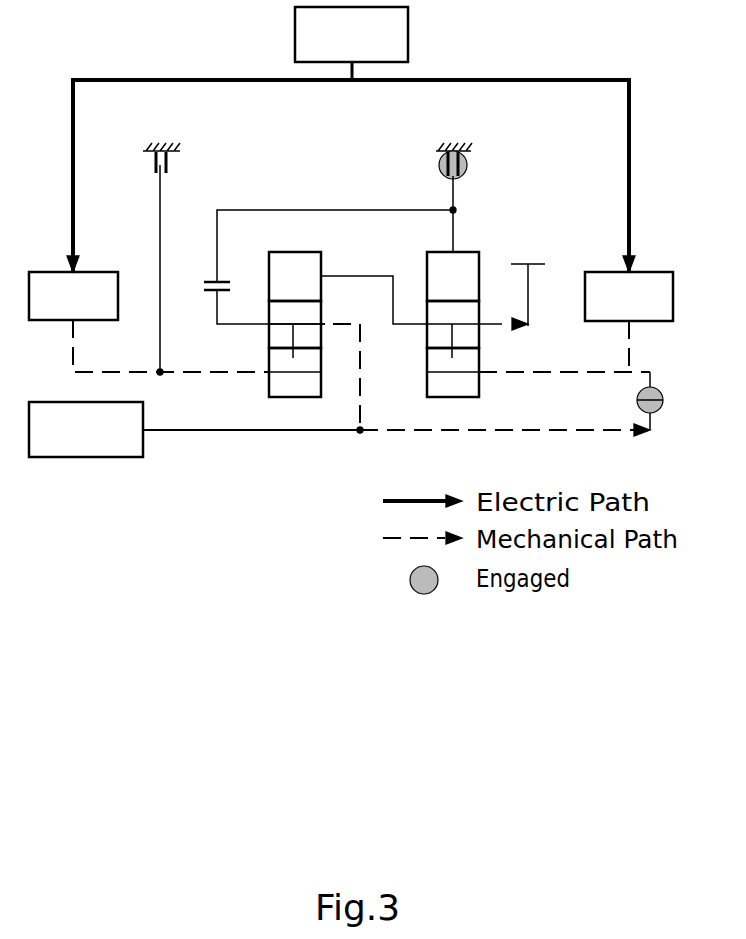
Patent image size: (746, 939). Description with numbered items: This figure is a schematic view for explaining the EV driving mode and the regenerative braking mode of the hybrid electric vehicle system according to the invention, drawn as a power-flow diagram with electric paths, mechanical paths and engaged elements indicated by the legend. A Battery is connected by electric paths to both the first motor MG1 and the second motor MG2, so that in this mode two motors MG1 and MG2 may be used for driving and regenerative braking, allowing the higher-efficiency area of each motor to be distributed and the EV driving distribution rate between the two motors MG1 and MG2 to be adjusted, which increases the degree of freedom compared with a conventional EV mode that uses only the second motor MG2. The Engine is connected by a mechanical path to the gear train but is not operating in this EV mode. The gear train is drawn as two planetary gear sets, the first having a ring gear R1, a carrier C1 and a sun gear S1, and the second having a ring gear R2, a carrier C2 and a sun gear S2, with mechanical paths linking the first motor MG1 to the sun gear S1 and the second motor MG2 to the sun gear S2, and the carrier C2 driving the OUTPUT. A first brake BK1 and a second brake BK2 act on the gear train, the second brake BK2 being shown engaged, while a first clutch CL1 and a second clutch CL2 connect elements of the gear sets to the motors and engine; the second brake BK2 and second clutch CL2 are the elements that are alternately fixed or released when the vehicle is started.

The battery Battery is at (351, 34).
The first motor MG1 is at (149, 323).
The second motor MG2 is at (576, 322).
The engine Engine is at (339, 429).
The first brake BK1 is at (161, 238).
The second brake BK2 is at (453, 178).
The first clutch CL1 is at (309, 267).
The second clutch CL2 is at (629, 401).
The first ring gear R1 is at (348, 288).
The first carrier C1 is at (314, 365).
The first sun gear S1 is at (295, 372).
The second ring gear R2 is at (453, 276).
The second carrier C2 is at (464, 329).
The second sun gear S2 is at (453, 372).
The output OUTPUT is at (524, 281).